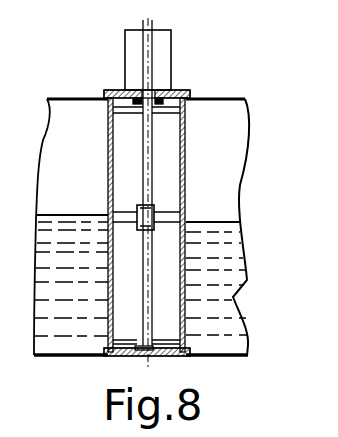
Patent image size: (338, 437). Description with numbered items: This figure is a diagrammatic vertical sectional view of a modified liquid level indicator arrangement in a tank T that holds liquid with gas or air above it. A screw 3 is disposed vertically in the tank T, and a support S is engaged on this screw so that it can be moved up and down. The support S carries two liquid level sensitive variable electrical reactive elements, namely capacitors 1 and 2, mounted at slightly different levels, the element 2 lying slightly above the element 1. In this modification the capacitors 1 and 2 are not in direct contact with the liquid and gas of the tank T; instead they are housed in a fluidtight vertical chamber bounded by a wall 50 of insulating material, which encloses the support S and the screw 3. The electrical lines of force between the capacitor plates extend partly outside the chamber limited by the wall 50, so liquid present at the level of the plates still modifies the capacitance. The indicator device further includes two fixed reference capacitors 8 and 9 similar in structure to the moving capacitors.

The tank T is at (59, 97).
The reference capacitor 9 is at (130, 108).
The wall 50 is at (183, 147).
The screw 3 is at (145, 138).
The liquid level sensitive variable electrical reactive element 1 is at (157, 212).
The liquid level sensitive variable electrical reactive element 2 is at (160, 213).
The support S is at (137, 231).
The reference capacitor 8 is at (108, 351).